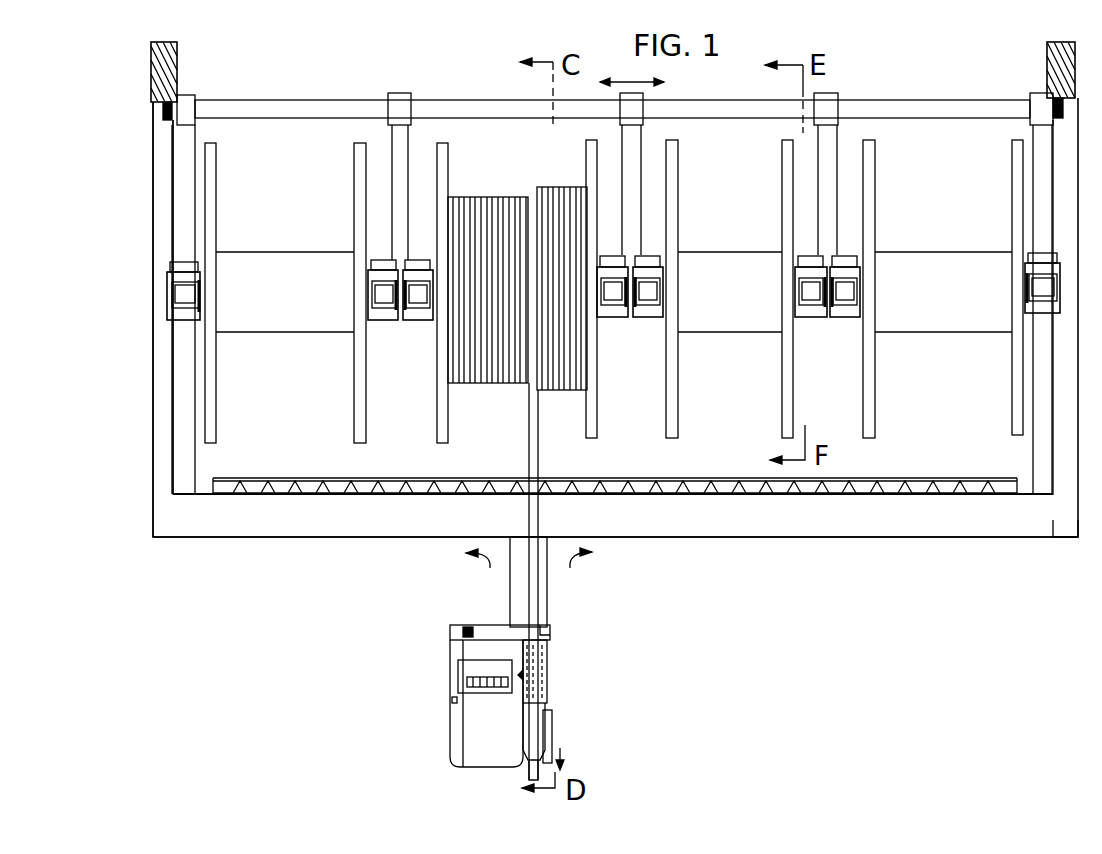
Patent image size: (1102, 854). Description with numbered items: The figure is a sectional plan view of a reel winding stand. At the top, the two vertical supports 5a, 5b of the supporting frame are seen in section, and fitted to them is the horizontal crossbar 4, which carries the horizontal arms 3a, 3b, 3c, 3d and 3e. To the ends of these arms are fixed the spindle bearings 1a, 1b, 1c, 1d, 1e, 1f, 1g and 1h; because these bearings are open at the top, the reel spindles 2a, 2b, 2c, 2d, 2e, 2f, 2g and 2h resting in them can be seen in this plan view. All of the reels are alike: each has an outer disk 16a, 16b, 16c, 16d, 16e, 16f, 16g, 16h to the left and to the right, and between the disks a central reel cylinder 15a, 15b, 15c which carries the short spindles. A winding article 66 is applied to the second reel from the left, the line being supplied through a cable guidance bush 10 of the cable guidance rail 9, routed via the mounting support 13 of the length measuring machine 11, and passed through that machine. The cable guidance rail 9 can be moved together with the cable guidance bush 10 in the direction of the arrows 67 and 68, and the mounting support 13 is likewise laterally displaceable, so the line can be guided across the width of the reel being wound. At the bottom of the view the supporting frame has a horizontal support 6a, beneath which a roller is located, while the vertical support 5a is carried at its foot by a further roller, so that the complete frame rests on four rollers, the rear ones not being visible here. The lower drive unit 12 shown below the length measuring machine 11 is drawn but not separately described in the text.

The spindle bearing 1a is at (168, 312).
The spindle bearing 1b is at (382, 320).
The spindle bearing 1c is at (418, 320).
The spindle bearing 1d is at (610, 318).
The spindle bearing 1e is at (650, 318).
The spindle bearing 1f is at (805, 318).
The spindle bearing 1g is at (845, 318).
The spindle bearing 1h is at (1042, 312).
The reel spindle 2a is at (178, 296).
The reel spindle 2b is at (381, 283).
The reel spindle 2c is at (421, 283).
The reel spindle 2d is at (610, 280).
The reel spindle 2e is at (650, 280).
The reel spindle 2f is at (805, 280).
The reel spindle 2g is at (845, 280).
The reel spindle 2h is at (1047, 280).
The horizontal arm 3a is at (178, 233).
The horizontal arm 3b is at (410, 183).
The horizontal arm 3c is at (640, 162).
The horizontal arm 3d is at (835, 164).
The horizontal arm 3e is at (1050, 165).
The horizontal crossbar 4 is at (312, 98).
The vertical support 5a is at (172, 62).
The vertical support 5b is at (1052, 57).
The horizontal support 6a is at (160, 507).
The cable guidance rail 9 is at (334, 528).
The cable guidance bush 10 is at (367, 490).
The length measuring machine 11 is at (478, 745).
The drive unit 12 is at (540, 680).
The mounting support 13 is at (547, 608).
The reel cylinder 15a is at (299, 262).
The reel cylinder 15b is at (733, 260).
The reel cylinder 15c is at (932, 258).
The outer disk 16a is at (216, 152).
The outer disk 16b is at (354, 160).
The outer disk 16c is at (448, 156).
The outer disk 16d is at (586, 155).
The outer disk 16e is at (678, 174).
The outer disk 16f is at (782, 164).
The outer disk 16g is at (875, 164).
The outer disk 16h is at (1012, 160).
The winding article 66 is at (530, 775).
The arrow 67 is at (474, 571).
The arrow 68 is at (596, 568).